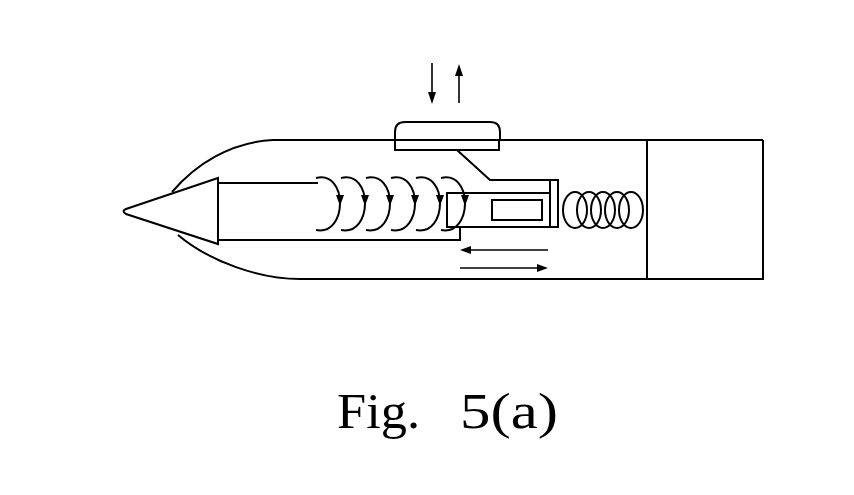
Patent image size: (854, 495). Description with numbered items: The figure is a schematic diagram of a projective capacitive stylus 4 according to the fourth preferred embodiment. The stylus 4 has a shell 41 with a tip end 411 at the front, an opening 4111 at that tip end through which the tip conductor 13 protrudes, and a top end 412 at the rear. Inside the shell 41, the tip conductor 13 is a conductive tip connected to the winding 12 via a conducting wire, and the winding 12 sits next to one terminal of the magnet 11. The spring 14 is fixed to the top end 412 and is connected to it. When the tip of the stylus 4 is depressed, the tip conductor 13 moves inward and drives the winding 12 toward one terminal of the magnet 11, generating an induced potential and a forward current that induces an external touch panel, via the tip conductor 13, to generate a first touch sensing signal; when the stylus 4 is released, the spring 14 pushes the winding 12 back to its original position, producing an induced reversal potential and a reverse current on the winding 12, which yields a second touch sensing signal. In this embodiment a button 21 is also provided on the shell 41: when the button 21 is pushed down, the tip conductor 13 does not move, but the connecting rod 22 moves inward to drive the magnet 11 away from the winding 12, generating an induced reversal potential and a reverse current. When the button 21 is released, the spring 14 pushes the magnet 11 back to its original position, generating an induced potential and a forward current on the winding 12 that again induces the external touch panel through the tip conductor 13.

The projective capacitive stylus 4 is at (769, 53).
The shell 41 is at (262, 140).
The tip end 411 is at (214, 262).
The opening 4111 is at (172, 191).
The top end 412 is at (650, 178).
The tip conductor 13 is at (140, 201).
The winding 12 is at (307, 242).
The magnet 11 is at (524, 195).
The spring 14 is at (602, 229).
The button 21 is at (468, 122).
The connecting rod 22 is at (468, 161).